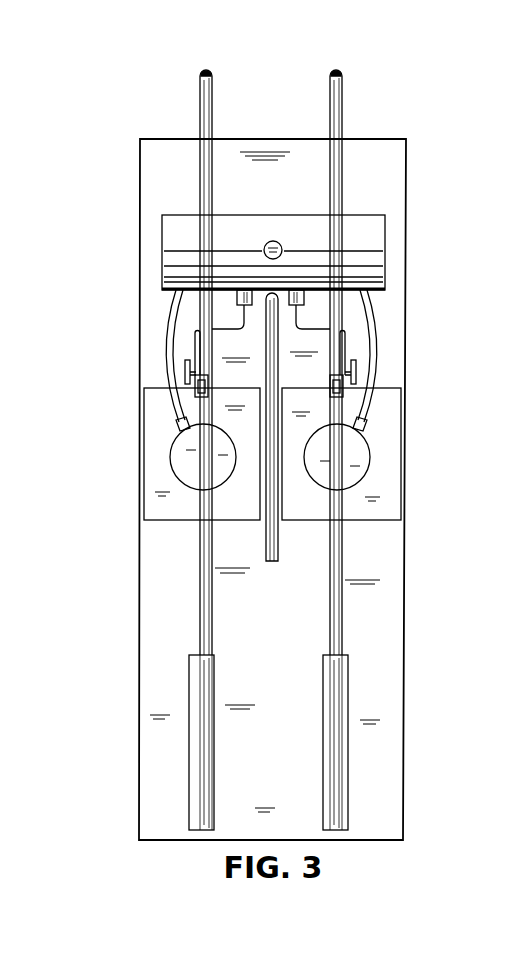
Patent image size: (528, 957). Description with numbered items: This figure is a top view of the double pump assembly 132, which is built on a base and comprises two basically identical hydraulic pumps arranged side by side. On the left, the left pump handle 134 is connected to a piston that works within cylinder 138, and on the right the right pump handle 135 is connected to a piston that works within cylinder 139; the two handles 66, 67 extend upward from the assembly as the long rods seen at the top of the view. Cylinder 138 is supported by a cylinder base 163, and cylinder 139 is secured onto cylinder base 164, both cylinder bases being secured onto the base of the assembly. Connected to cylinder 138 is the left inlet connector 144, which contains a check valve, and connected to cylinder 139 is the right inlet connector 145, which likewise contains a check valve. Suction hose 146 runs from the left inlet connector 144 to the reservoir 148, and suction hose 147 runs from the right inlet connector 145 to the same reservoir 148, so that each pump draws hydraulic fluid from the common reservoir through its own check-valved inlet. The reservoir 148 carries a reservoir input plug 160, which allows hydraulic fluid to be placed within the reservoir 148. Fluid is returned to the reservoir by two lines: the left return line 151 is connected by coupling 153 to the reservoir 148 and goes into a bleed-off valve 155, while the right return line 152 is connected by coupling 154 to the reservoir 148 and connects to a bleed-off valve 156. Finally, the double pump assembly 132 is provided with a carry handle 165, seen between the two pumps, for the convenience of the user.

The left guide rod 66 is at (199, 82).
The right guide rod 67 is at (343, 84).
The double pump assembly 132 is at (96, 685).
The left pump handle 134 is at (189, 745).
The right pump handle 135 is at (348, 766).
The cylinder 138 is at (172, 468).
The cylinder 139 is at (368, 469).
The left inlet connector 144 is at (178, 429).
The right inlet connector 145 is at (361, 428).
The suction hose 146 is at (166, 330).
The suction hose 147 is at (373, 372).
The reservoir 148 is at (255, 215).
The left return line 151 is at (210, 320).
The right return line 152 is at (314, 327).
The coupling 153 is at (238, 296).
The coupling 154 is at (304, 296).
The bleed-off valve 155 is at (184, 372).
The bleed-off valve 156 is at (356, 368).
The reservoir input plug 160 is at (281, 245).
The cylinder base 163 is at (146, 519).
The cylinder base 164 is at (399, 519).
The carry handle 165 is at (279, 552).